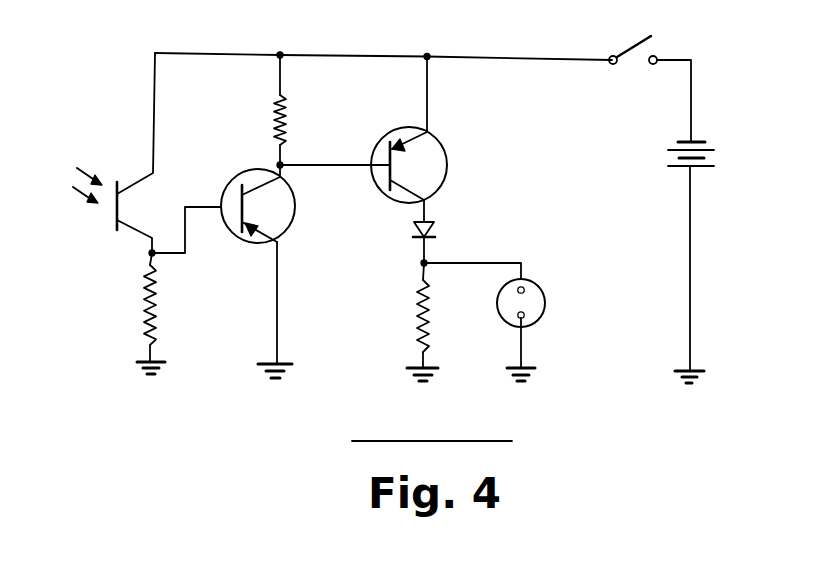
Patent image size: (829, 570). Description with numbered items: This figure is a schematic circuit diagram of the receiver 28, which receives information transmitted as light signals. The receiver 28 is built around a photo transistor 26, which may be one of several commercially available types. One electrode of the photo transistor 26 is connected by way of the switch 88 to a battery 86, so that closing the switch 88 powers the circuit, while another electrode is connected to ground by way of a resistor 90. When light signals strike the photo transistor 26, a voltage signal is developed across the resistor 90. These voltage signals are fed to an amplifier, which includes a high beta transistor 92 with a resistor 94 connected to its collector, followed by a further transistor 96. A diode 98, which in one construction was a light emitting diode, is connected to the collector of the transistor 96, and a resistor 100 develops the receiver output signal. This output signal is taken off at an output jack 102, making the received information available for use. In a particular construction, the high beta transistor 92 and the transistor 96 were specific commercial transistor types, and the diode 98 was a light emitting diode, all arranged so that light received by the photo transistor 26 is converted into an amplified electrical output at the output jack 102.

The photo transistor 26 is at (129, 186).
The receiver 28 is at (393, 238).
The battery 86 is at (673, 150).
The switch 88 is at (639, 51).
The resistor 90 is at (156, 320).
The high beta transistor 92 is at (291, 222).
The resistor 94 is at (282, 122).
The transistor 96 is at (447, 170).
The diode 98 is at (435, 228).
The resistor 100 is at (417, 318).
The output jack 102 is at (538, 297).